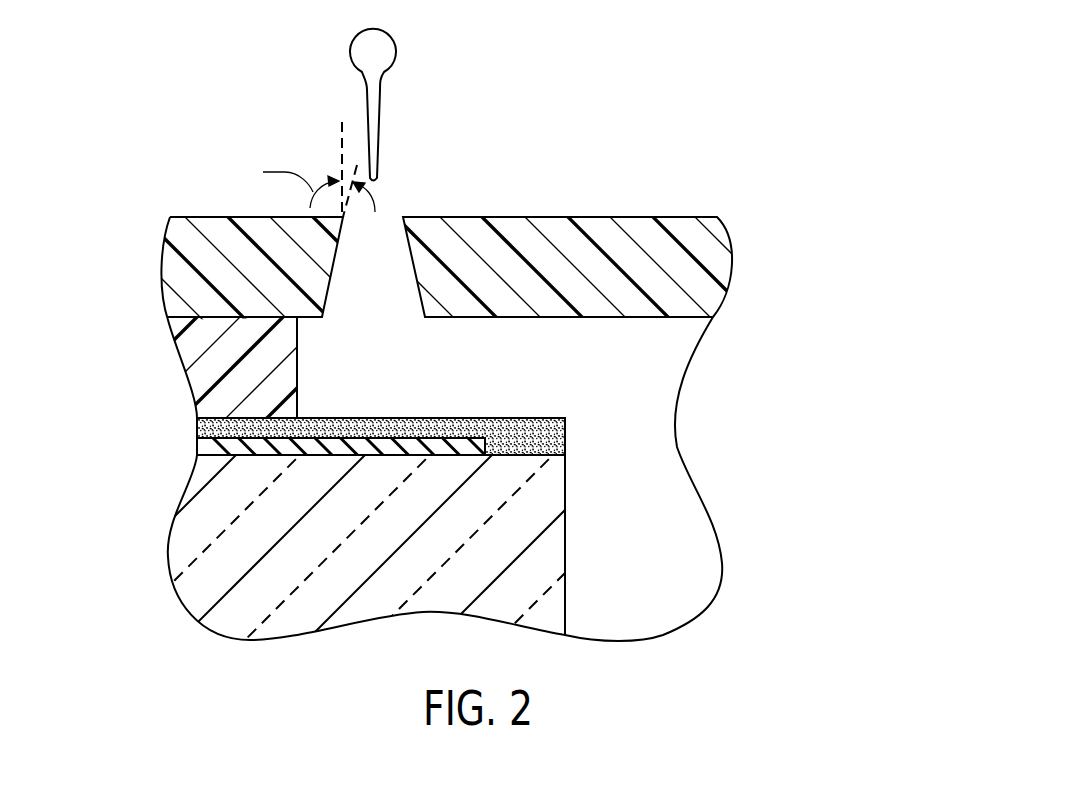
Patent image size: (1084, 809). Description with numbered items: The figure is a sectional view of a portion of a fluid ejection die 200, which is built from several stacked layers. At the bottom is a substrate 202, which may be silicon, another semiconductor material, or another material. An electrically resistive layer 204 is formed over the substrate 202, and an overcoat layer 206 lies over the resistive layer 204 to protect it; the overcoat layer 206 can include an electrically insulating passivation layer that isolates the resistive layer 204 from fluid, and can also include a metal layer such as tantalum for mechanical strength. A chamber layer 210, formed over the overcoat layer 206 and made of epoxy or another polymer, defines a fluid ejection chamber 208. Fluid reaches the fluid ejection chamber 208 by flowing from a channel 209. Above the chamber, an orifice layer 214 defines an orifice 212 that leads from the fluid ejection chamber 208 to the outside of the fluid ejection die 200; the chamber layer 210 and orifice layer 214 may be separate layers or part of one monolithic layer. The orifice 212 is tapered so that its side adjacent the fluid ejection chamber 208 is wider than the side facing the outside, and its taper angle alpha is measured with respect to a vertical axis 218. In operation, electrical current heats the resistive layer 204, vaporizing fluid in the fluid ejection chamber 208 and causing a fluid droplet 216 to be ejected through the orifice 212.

The fluid ejection die 200 is at (447, 355).
The substrate 202 is at (238, 608).
The electrically resistive layer 204 is at (262, 447).
The overcoat layer 206 is at (365, 432).
The fluid ejection chamber 208 is at (607, 368).
The channel 209 is at (663, 580).
The chamber layer 210 is at (208, 365).
The orifice 212 is at (382, 245).
The orifice layer 214 is at (178, 275).
The fluid droplet 216 is at (378, 77).
The vertical axis 218 is at (341, 137).